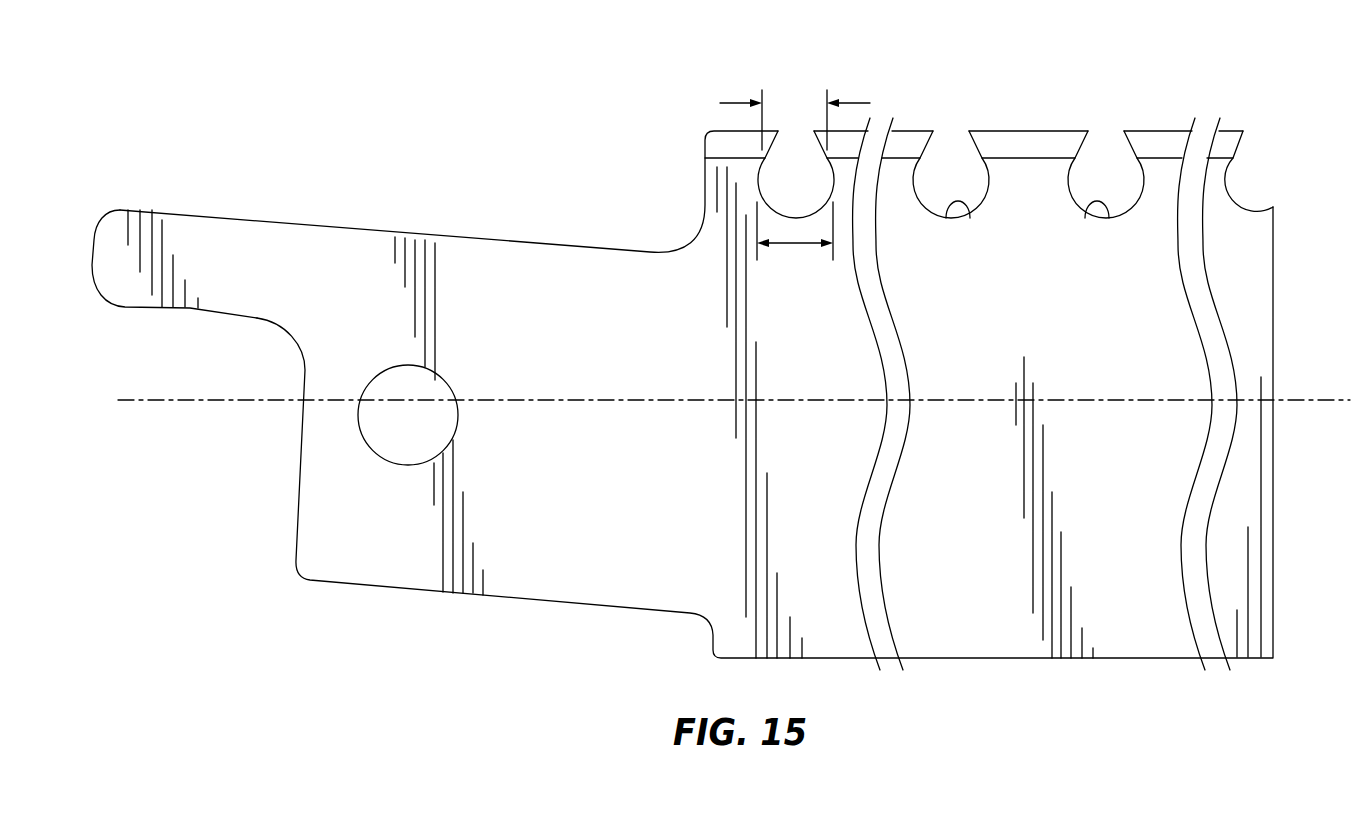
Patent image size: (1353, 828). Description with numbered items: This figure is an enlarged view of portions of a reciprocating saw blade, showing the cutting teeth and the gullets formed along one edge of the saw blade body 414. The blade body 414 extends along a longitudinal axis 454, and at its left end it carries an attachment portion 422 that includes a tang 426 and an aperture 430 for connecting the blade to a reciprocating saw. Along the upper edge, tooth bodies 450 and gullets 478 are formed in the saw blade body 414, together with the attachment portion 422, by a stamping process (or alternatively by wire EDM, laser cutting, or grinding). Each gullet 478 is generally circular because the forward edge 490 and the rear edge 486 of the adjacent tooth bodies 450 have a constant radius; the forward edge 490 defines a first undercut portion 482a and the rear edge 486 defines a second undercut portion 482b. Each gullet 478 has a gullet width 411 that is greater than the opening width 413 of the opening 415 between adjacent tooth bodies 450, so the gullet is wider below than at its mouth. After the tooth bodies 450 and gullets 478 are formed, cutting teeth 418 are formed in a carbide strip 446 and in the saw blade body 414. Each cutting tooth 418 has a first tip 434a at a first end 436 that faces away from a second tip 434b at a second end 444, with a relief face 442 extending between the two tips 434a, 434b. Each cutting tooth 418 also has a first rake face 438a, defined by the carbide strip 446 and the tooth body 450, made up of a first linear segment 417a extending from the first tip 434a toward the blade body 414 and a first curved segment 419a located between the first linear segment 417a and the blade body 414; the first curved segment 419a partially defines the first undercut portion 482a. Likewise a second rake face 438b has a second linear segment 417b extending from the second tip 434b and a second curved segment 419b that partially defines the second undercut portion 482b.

The gullet width 411 is at (795, 245).
The opening width 413 is at (745, 102).
The saw blade body 414 is at (1112, 598).
The opening 415 is at (792, 170).
The first linear segment 417a is at (984, 196).
The second linear segment 417b is at (1085, 150).
The cutting tooth 418 is at (1007, 78).
The first curved segment 419a is at (932, 142).
The second curved segment 419b is at (1072, 182).
The attachment portion 422 is at (462, 120).
The tang 426 is at (187, 262).
The aperture 430 is at (413, 463).
The first tip 434a is at (962, 150).
The second tip 434b is at (1078, 155).
The first end 436 is at (966, 235).
The first rake face 438a is at (945, 188).
The second rake face 438b is at (1112, 188).
The relief face 442 is at (1018, 130).
The second end 444 is at (1091, 235).
The strip 446 is at (1042, 148).
The tooth body 450 is at (1049, 192).
The longitudinal axis 454 is at (1287, 399).
The gullet 478 is at (793, 217).
The first undercut portion 482a is at (946, 220).
The second undercut portion 482b is at (1109, 218).
The rear edge 486 is at (1084, 218).
The forward edge 490 is at (971, 218).